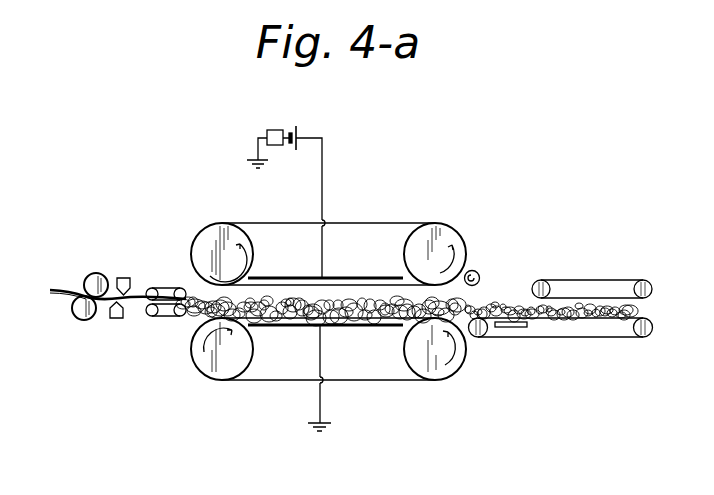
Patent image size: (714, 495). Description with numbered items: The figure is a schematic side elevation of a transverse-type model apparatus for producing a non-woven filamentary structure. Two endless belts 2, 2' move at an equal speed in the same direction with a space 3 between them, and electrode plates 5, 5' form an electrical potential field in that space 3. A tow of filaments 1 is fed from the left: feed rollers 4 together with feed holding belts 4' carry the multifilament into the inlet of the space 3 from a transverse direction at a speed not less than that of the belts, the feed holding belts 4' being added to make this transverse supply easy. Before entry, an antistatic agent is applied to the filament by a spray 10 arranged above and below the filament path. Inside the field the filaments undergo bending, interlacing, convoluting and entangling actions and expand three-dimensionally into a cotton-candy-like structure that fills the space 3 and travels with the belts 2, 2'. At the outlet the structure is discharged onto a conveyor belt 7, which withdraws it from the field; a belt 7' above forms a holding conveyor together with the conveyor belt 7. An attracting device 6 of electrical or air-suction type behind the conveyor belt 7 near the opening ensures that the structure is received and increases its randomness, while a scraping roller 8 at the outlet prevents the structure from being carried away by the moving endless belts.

The sheet material / web 1 is at (62, 298).
The endless belt 2 is at (344, 235).
The endless belt 2' is at (328, 366).
The space 3 is at (268, 285).
The feed rollers 4 is at (86, 272).
The feed holding belts 4' is at (166, 298).
The electrode plate 5 is at (325, 233).
The electrode plate 5' is at (325, 373).
The attracting device 6 is at (508, 329).
The conveyor belt 7 is at (561, 354).
The belt 7' is at (592, 270).
The scraping roller 8 is at (474, 271).
The spray 10 is at (125, 276).